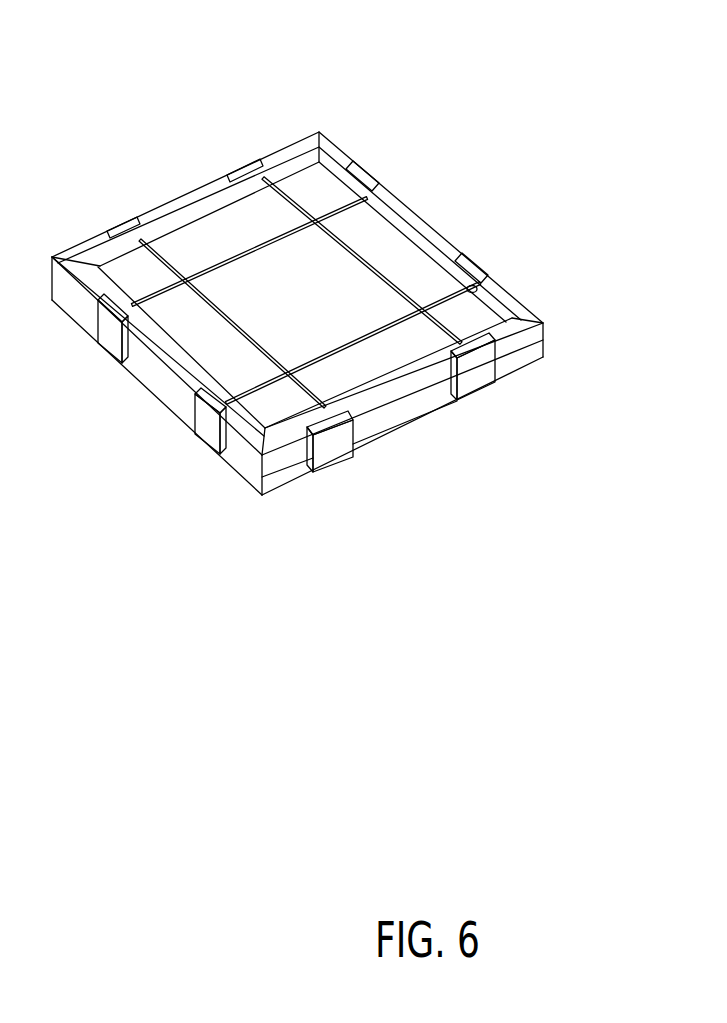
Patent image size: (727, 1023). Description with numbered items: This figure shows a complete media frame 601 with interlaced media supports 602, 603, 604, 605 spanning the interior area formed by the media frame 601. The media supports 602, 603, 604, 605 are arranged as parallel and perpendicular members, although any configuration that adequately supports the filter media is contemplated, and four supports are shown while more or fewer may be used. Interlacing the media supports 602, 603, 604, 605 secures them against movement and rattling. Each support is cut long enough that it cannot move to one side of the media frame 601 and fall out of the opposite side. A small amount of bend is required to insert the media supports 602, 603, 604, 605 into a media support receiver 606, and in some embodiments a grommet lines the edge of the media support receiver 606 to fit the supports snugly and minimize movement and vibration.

The media frame 601 is at (203, 187).
The media support 602 is at (349, 198).
The media support 603 is at (152, 323).
The media support 604 is at (230, 413).
The media support 605 is at (383, 277).
The media support receiver 606 is at (480, 287).